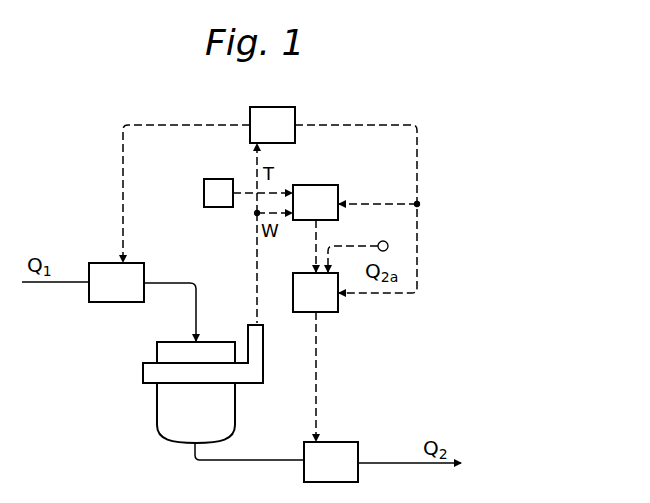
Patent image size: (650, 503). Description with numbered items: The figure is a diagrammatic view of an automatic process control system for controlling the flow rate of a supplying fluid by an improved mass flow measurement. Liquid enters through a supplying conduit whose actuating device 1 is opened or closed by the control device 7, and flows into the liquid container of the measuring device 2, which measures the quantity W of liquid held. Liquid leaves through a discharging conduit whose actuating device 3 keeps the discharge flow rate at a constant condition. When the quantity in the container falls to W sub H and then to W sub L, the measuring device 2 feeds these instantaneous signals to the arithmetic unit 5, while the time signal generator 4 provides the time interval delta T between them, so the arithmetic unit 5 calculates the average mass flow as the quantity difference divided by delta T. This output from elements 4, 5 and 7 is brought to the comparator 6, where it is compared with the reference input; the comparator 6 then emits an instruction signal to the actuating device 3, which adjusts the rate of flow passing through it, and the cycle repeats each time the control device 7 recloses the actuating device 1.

The actuating device of the supplying conduit 1 is at (105, 298).
The measuring device of mass flow rate 2 is at (163, 422).
The actuating device of discharging conduit 3 is at (333, 450).
The time signal generator 4 is at (220, 200).
The arithmetic unit 5 is at (318, 192).
The comparator 6 is at (302, 315).
The control device 7 is at (276, 112).